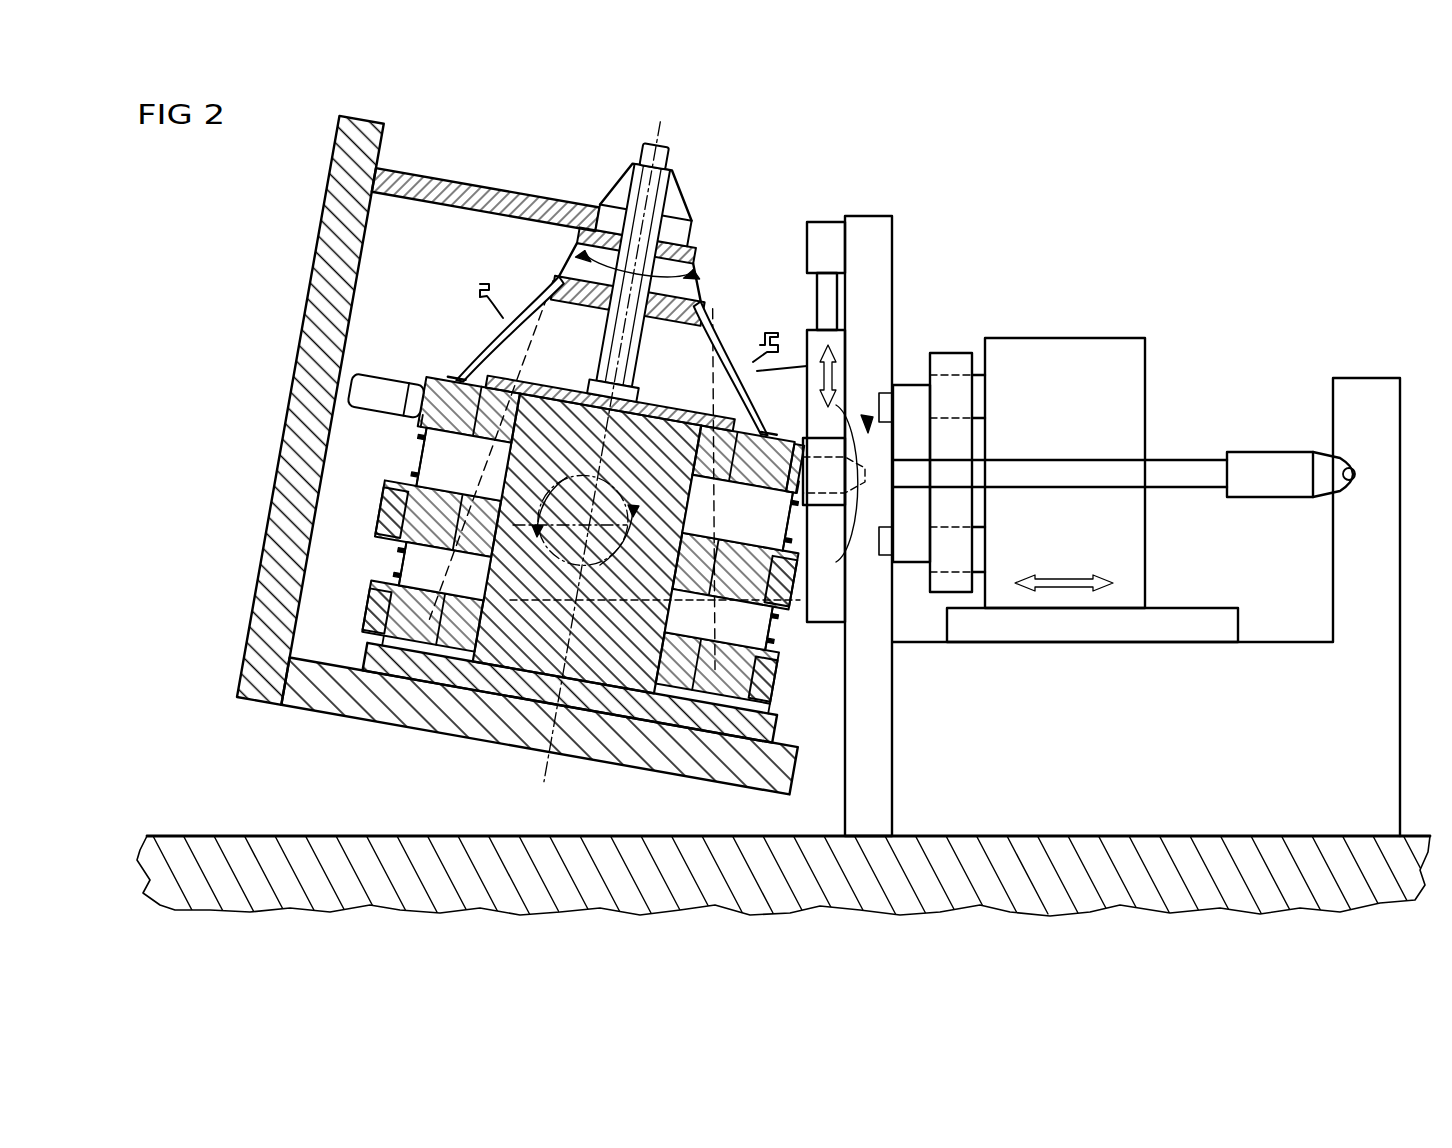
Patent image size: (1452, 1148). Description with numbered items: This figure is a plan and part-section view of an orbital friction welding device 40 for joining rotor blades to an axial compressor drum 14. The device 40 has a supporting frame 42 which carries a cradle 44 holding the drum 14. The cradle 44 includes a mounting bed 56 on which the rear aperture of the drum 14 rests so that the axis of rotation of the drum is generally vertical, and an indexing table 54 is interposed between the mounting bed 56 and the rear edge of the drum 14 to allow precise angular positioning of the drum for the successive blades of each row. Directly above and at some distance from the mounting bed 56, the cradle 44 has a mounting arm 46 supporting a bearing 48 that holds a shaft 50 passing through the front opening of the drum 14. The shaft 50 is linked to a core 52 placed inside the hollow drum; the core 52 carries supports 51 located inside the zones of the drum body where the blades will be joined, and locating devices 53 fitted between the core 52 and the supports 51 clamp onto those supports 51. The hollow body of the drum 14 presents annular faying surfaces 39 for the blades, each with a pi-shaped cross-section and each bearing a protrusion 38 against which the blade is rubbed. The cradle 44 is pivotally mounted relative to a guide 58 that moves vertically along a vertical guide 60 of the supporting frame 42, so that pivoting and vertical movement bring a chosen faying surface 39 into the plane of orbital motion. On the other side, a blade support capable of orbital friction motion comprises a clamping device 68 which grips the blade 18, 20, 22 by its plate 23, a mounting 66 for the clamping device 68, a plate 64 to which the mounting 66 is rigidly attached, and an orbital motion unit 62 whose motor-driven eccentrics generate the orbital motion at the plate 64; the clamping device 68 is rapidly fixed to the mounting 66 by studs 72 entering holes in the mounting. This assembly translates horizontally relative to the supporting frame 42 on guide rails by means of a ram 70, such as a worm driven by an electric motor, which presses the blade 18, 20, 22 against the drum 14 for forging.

The drum 14 is at (448, 308).
The blade 18 is at (383, 383).
The blade 20 is at (870, 480).
The blade 22 is at (940, 500).
The plate 23 is at (403, 382).
The protrusion 38 is at (390, 502).
The faying surface 39 is at (387, 488).
The orbital friction welding device 40 is at (955, 462).
The supporting frame 42 is at (360, 843).
The cradle 44 is at (241, 401).
The mounting arm 46 is at (506, 200).
The bearing 48 is at (623, 183).
The shaft 50 is at (675, 158).
The supports 51 is at (445, 383).
The core 52 is at (597, 667).
The locating devices 53 is at (530, 433).
The indexing table 54 is at (760, 724).
The mounting bed 56 is at (345, 662).
The guide 58 is at (797, 363).
The vertical guide 60 is at (871, 227).
The orbital motion unit 62 is at (1060, 350).
The plate 64 is at (950, 365).
The mounting 66 is at (908, 395).
The clamping device 68 is at (880, 460).
The ram 70 is at (1263, 462).
The studs 72 is at (824, 230).